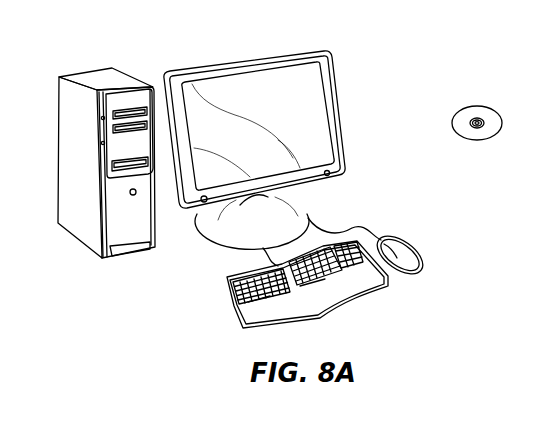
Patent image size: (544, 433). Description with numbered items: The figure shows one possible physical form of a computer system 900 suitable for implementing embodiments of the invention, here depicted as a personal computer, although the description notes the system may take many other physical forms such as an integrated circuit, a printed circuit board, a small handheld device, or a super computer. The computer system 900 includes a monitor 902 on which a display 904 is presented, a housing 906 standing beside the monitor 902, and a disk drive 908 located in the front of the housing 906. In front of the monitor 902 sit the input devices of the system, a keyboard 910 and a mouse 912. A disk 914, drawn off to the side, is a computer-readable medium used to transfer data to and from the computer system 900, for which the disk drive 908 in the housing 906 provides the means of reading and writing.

The computer system 900 is at (421, 41).
The monitor 902 is at (341, 128).
The display 904 is at (306, 82).
The housing 906 is at (98, 76).
The disk drive 908 is at (140, 164).
The keyboard 910 is at (232, 304).
The mouse 912 is at (416, 249).
The disk 914 is at (492, 107).